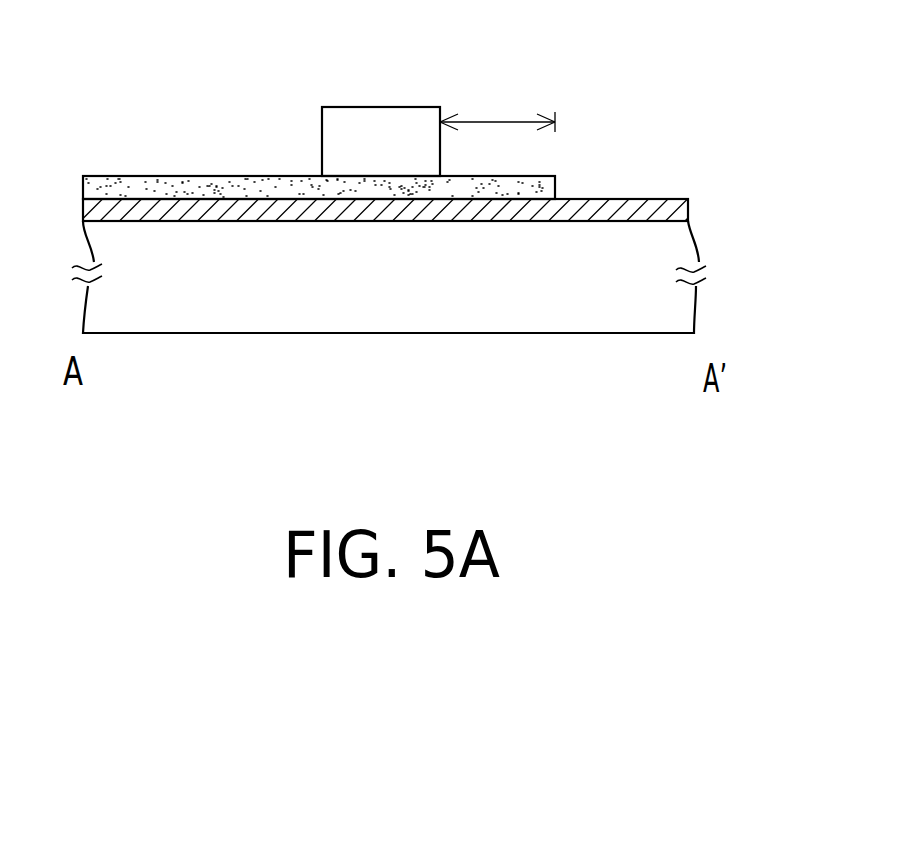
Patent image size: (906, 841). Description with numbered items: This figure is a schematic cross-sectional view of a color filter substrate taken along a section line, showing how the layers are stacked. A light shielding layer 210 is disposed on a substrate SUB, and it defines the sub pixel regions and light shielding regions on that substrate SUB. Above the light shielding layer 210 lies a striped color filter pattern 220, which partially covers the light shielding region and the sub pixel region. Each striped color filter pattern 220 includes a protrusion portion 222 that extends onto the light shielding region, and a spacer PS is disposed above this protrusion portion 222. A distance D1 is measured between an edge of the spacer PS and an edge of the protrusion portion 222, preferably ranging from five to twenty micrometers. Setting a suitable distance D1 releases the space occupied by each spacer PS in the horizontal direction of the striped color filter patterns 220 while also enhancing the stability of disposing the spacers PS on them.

The striped color filter pattern 220 is at (157, 187).
The protrusion portion 222 is at (517, 176).
The light shielding layer 210 is at (678, 207).
The spacer PS is at (372, 128).
The distance D1 is at (497, 101).
The substrate SUB is at (620, 314).